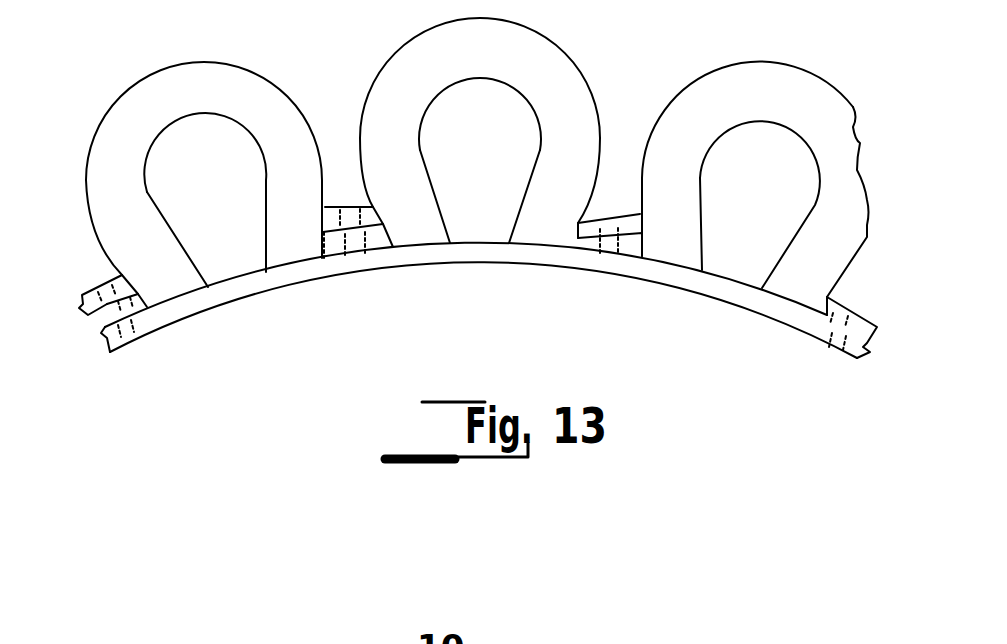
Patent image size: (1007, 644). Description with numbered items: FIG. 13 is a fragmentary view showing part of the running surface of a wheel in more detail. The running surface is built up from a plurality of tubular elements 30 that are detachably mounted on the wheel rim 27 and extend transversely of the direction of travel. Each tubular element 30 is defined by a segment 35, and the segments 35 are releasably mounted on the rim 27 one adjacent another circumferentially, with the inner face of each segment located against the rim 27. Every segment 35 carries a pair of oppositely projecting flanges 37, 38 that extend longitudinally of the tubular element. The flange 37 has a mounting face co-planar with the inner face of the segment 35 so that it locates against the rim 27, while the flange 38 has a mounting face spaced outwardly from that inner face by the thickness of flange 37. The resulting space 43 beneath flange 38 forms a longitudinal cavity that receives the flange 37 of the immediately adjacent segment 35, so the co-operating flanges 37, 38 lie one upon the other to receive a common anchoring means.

The rim 27 is at (492, 260).
The tubular element 30 is at (500, 38).
The segment 35 is at (86, 162).
The flange 37 is at (353, 240).
The flange 38 is at (341, 200).
The space 43 is at (107, 322).